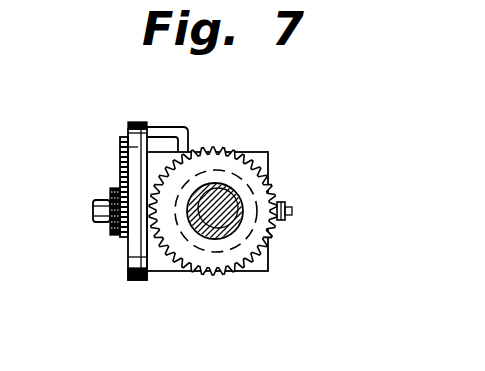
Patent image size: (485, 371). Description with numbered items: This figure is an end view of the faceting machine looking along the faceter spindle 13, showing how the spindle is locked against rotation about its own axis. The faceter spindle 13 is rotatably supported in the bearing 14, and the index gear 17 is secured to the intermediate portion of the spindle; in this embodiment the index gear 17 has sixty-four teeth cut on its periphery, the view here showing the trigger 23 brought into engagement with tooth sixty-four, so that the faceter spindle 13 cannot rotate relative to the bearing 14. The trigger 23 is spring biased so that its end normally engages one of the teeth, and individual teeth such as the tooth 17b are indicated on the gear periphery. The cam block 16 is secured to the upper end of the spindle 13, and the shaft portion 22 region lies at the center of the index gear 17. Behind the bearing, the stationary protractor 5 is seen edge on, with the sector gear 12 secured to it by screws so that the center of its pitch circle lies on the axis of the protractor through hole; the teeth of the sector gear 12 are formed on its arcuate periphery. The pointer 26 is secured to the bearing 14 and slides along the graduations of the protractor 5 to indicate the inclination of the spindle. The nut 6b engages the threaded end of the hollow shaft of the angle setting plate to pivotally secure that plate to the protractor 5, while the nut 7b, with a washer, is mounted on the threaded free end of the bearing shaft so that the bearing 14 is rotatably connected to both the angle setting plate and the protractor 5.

The stationary protractor 5 is at (140, 121).
The sector gear 12 is at (118, 146).
The pointer 26 is at (163, 131).
The bearing 14 is at (262, 151).
The index gear 17 is at (263, 182).
The gear teeth 17b is at (274, 234).
The trigger 23 is at (292, 209).
The faceter spindle 13 is at (238, 234).
The cam block 16 is at (190, 233).
The shaft 22 is at (200, 242).
The nut 7b is at (101, 224).
The nut 6b is at (116, 238).